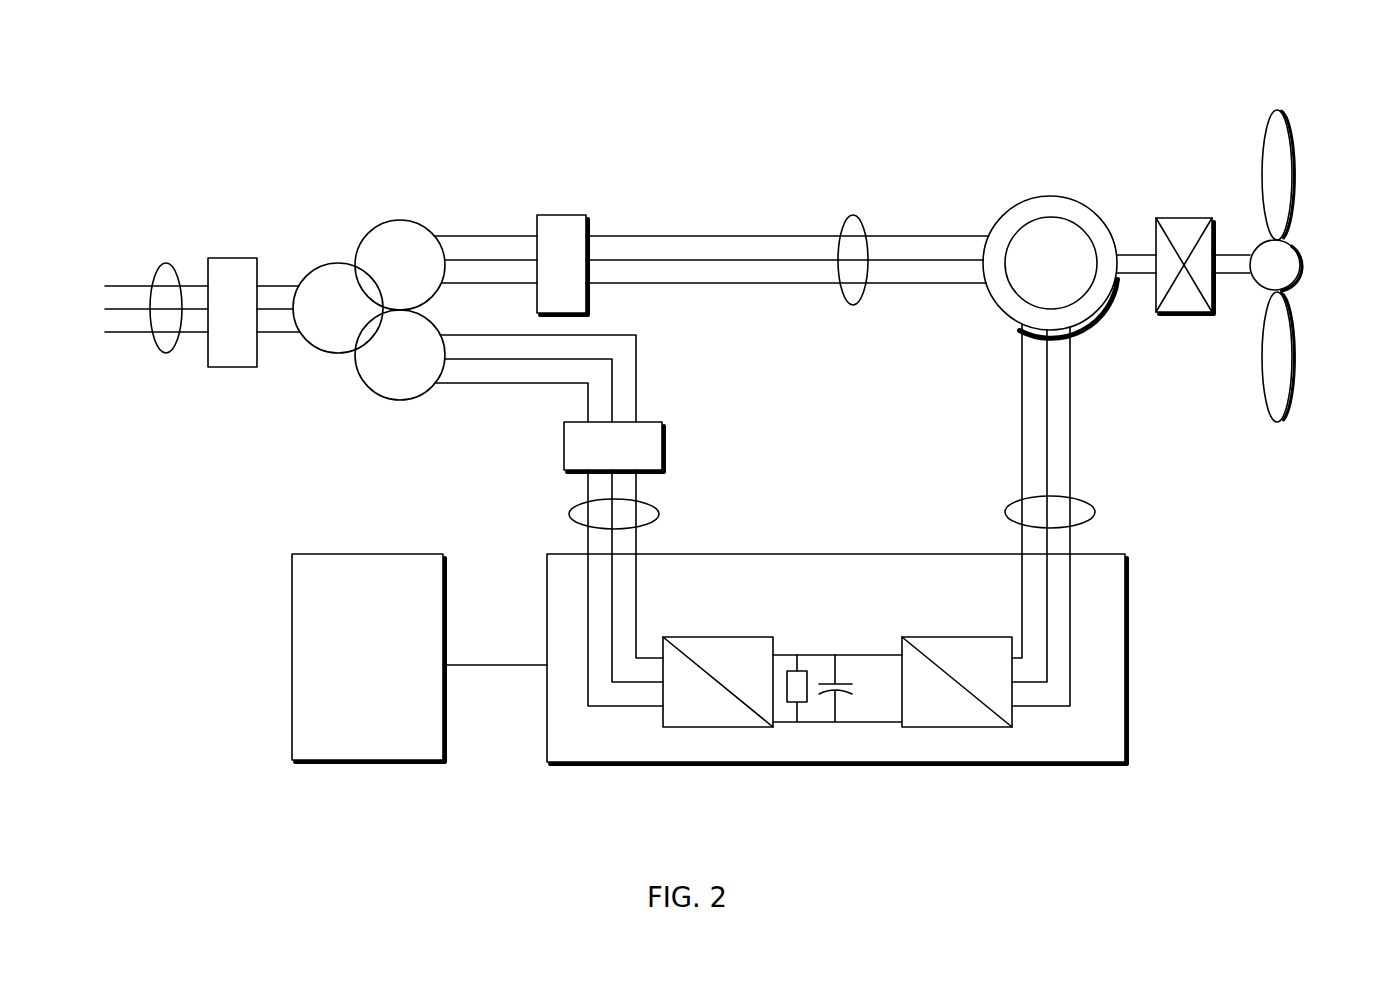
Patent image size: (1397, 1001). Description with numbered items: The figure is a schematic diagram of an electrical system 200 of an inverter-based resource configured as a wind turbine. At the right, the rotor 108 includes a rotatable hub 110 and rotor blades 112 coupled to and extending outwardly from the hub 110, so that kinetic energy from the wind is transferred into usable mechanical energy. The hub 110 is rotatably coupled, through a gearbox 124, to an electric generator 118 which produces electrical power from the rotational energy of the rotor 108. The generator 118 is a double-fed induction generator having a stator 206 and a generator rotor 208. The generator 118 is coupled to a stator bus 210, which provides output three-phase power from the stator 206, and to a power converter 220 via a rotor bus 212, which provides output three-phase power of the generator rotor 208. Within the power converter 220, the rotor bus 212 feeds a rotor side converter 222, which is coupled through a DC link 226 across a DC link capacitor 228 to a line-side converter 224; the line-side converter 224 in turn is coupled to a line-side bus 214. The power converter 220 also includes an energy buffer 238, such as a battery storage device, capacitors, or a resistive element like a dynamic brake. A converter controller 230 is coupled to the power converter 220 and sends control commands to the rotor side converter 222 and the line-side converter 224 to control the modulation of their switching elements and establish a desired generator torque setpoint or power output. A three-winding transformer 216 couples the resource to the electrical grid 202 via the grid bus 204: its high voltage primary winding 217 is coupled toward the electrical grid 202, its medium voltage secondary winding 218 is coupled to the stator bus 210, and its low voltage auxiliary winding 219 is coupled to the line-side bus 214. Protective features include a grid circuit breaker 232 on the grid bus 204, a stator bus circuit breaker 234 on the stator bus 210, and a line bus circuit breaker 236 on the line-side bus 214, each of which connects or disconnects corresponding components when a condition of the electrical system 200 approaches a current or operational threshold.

The electrical system 200 is at (733, 63).
The electrical grid 202 is at (80, 339).
The grid bus 204 is at (165, 262).
The stator 206 is at (1100, 214).
The generator rotor 208 is at (1140, 352).
The stator bus 210 is at (855, 215).
The rotor bus 212 is at (1095, 512).
The line-side bus 214 is at (568, 514).
The transformer 216 is at (363, 183).
The primary winding 217 is at (320, 353).
The secondary winding 218 is at (410, 219).
The auxiliary winding 219 is at (398, 400).
The power converter 220 is at (871, 687).
The rotor side converter 222 is at (983, 728).
The line-side converter 224 is at (697, 728).
The DC link 226 is at (835, 638).
The DC link capacitor 228 is at (842, 695).
The converter controller 230 is at (297, 634).
The grid circuit breaker 232 is at (232, 258).
The stator bus circuit breaker 234 is at (565, 214).
The line bus circuit breaker 236 is at (564, 447).
The energy buffer 238 is at (803, 703).
The electric generator 118 is at (1050, 195).
The gearbox 124 is at (1180, 217).
The rotor 108 is at (1306, 131).
The hub 110 is at (1300, 265).
The rotor blade 112 is at (1293, 190).